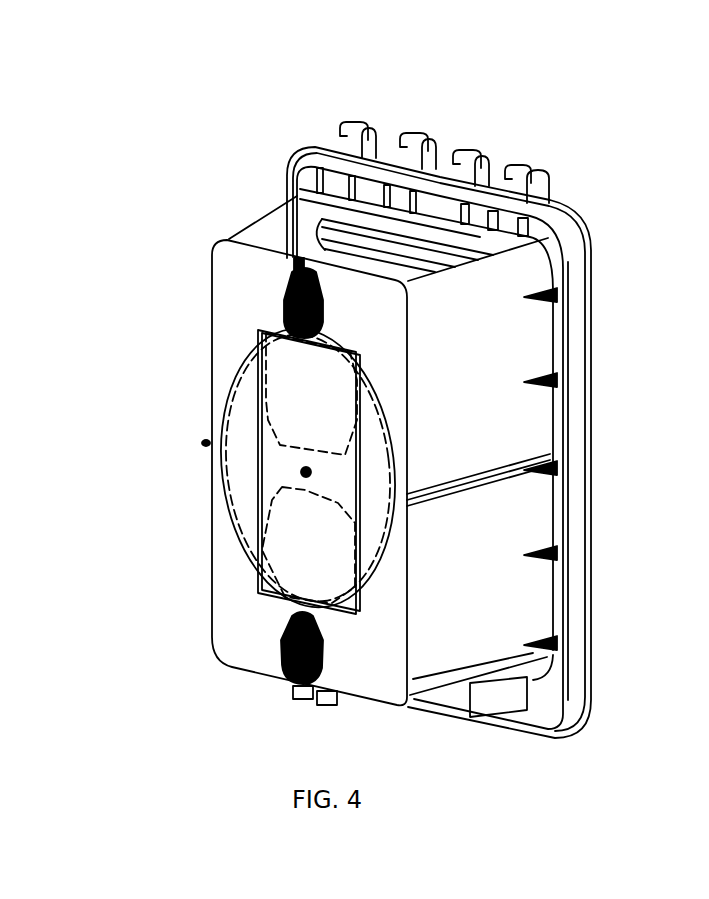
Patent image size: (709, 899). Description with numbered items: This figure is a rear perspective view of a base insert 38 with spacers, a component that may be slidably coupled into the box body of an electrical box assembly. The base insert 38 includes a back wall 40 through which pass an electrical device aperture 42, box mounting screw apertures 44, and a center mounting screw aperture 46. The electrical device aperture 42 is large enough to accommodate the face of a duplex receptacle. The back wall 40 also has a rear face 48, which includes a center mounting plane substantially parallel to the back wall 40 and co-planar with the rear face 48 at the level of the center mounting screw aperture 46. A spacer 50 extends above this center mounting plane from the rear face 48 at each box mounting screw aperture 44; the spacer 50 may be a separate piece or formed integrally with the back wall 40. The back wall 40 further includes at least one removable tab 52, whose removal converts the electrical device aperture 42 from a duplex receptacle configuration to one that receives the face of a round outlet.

The base insert 38 is at (591, 494).
The back wall 40 is at (236, 652).
The electrical device aperture 42 is at (300, 407).
The box mounting screw aperture 44 is at (288, 312).
The center mounting screw aperture 46 is at (302, 476).
The rear face 48 is at (382, 661).
The spacer 50 is at (300, 262).
The removable tab 52 is at (375, 482).